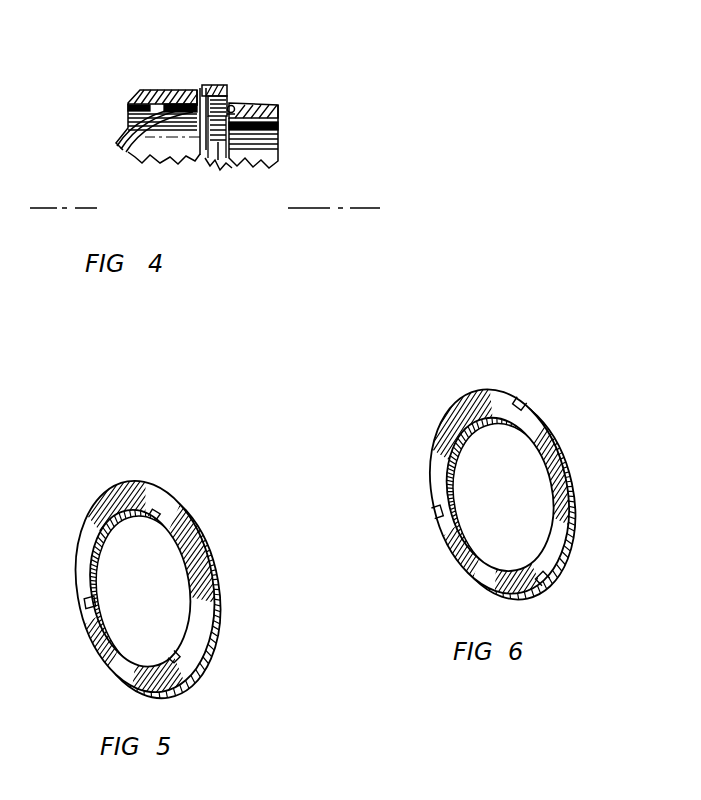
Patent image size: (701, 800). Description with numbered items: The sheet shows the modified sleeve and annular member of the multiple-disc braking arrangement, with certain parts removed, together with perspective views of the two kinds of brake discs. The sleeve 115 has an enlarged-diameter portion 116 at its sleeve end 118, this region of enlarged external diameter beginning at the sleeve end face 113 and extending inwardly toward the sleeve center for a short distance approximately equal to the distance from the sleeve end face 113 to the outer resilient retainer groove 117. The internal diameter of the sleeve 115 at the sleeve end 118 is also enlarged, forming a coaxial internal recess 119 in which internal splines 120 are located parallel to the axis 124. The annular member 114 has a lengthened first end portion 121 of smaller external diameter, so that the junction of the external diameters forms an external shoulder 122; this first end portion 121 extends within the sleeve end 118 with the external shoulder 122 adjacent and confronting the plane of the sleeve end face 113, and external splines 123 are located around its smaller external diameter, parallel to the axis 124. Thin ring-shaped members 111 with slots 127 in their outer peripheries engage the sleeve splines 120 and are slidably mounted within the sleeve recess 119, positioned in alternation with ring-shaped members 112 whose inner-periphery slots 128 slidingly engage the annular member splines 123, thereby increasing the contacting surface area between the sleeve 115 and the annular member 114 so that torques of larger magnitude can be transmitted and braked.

In FIG. 6, the ring-shaped member 111 is at (564, 480).
In FIG. 5, the ring-shaped member 112 is at (197, 538).
In FIG. 4, the sleeve end face 113 is at (224, 98).
In FIG. 4, the annular member 114 is at (266, 108).
In FIG. 4, the sleeve 115 is at (150, 94).
In FIG. 4, the enlarged-diameter portion 116 is at (201, 95).
In FIG. 4, the outer resilient retainer groove 117 is at (187, 140).
In FIG. 4, the sleeve end 118 is at (208, 86).
In FIG. 4, the internal recess 119 is at (200, 103).
In FIG. 4, the internal spline 120 is at (234, 105).
In FIG. 4, the annular member first end portion 121 is at (216, 138).
In FIG. 4, the external shoulder 122 is at (238, 111).
In FIG. 4, the external spline 123 is at (226, 135).
In FIG. 4, the axis 124 is at (353, 208).
In FIG. 6, the slot 127 is at (534, 423).
In FIG. 5, the inner-periphery slot 128 is at (106, 598).